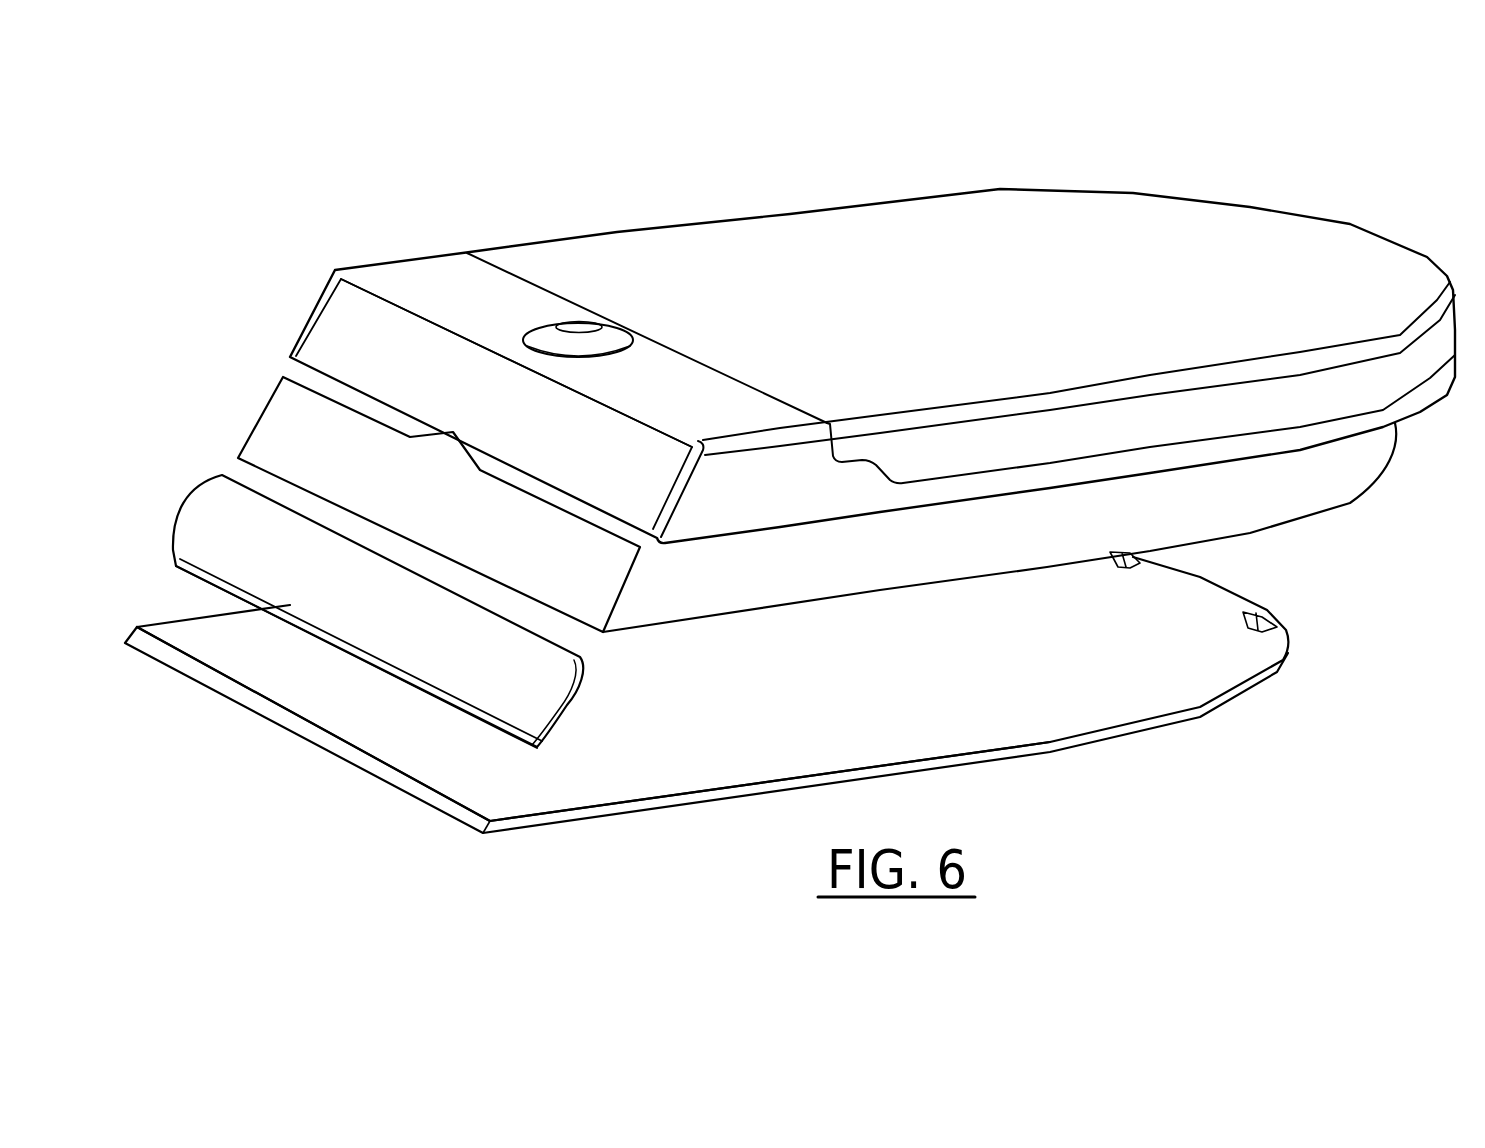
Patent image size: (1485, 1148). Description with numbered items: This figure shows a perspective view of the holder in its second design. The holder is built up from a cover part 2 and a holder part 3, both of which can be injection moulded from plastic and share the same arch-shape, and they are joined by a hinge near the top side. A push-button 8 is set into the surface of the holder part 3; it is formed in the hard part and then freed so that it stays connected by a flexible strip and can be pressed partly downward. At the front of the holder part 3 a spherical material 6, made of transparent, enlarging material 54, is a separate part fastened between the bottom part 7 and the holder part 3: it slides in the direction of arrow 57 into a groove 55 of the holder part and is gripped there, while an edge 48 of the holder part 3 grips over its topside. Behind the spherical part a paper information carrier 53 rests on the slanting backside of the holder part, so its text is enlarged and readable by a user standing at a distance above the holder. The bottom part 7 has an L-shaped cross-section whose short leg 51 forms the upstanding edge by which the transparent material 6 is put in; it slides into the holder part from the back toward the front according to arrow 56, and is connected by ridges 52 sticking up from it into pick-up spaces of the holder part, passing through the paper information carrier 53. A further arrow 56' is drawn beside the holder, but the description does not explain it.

The cover part 2 is at (787, 223).
The holder part 3 is at (403, 273).
The spherical material 6 is at (347, 623).
The bottom part 7 is at (1067, 723).
The push-button 8 is at (577, 325).
The edge 48 is at (442, 323).
The short leg 51 is at (340, 717).
The ridges 52 is at (1243, 620).
The paper information carrier 53 is at (707, 600).
The material 54 is at (166, 485).
The groove 55 is at (310, 318).
The arrow 56 is at (1313, 564).
The reverse direction of displacement 56' is at (223, 347).
The arrow 57 is at (474, 526).